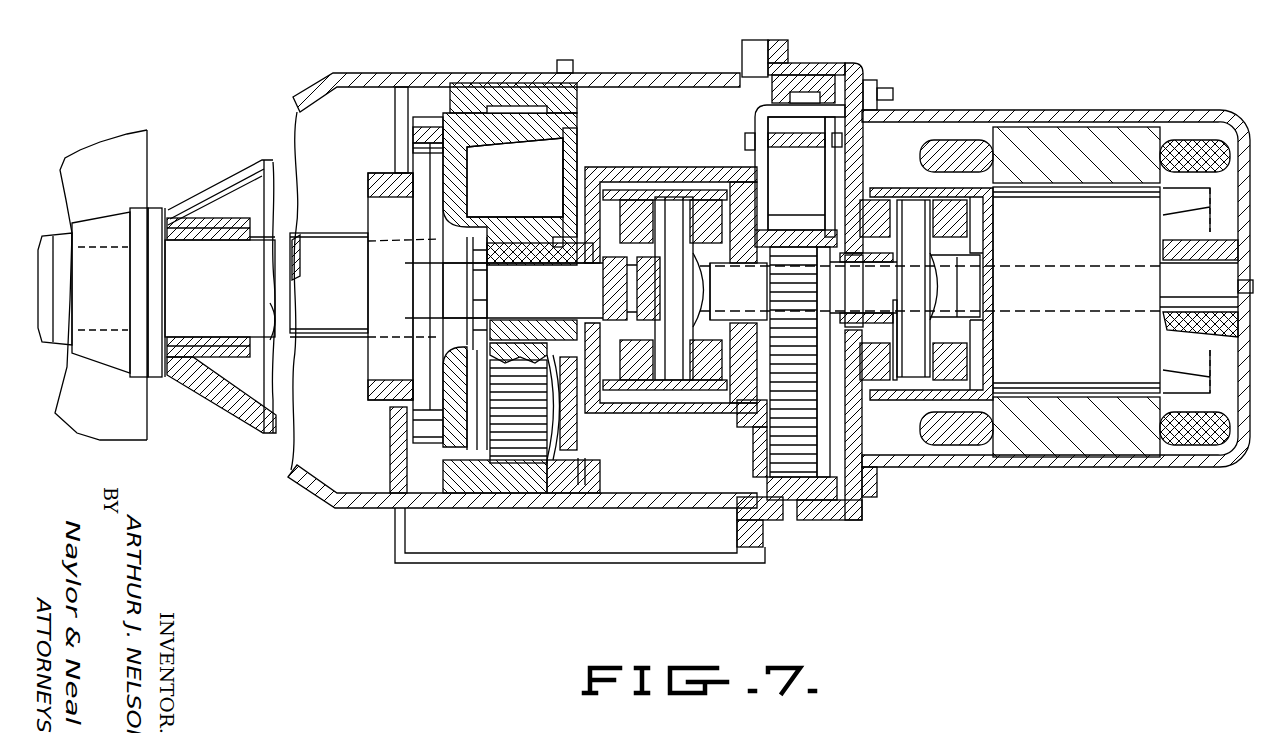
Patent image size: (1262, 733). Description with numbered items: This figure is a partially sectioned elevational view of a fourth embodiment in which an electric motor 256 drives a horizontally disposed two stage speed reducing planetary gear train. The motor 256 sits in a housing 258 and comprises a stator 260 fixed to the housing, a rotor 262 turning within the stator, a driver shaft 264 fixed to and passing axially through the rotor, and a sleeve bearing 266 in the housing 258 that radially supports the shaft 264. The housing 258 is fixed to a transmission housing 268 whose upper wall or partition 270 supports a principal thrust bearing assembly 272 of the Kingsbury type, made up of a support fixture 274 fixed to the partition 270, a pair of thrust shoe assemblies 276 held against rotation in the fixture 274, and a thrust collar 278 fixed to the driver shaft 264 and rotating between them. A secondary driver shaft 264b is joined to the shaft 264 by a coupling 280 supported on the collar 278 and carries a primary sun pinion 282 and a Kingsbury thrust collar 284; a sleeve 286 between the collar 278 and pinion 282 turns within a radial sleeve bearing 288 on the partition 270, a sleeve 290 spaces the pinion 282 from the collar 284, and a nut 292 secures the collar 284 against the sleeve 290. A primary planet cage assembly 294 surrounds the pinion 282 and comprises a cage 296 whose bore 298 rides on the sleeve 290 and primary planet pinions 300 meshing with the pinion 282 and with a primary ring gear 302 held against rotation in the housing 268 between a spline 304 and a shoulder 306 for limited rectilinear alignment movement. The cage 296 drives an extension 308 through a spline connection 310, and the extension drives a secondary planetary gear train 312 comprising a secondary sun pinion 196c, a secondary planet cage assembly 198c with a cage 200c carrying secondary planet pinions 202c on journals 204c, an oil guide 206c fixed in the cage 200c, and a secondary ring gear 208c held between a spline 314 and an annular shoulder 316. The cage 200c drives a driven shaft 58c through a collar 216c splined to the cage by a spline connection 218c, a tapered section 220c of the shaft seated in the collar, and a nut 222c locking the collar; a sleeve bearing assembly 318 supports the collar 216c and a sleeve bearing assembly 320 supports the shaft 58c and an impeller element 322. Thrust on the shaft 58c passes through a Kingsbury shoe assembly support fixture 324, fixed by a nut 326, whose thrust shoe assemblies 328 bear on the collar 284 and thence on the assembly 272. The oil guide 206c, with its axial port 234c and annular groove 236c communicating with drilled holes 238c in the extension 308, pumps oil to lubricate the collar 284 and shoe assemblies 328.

The driven shaft 58c is at (340, 345).
The secondary sun pinion 196c is at (510, 228).
The secondary planet cage assembly 198c is at (435, 108).
The cage 200c is at (578, 140).
The secondary planet pinions 202c is at (480, 478).
The journals 204c is at (556, 400).
The oil guide 206c is at (555, 200).
The secondary ring gear 208c is at (505, 487).
The collar 216c is at (425, 150).
The spline connection 218c is at (425, 132).
The tapered section 220c is at (375, 225).
The nut 222c is at (470, 327).
The axial port 234c is at (548, 320).
The annular groove 236c is at (580, 310).
The drilled holes 238c is at (563, 305).
The electric motor 256 is at (1080, 140).
The housing 258 is at (1040, 462).
The stator 260 is at (1197, 445).
The rotor 262 is at (1102, 369).
The driver shaft 264 is at (1185, 293).
The secondary driver shaft 264b is at (772, 250).
The sleeve bearing 266 is at (1180, 252).
The transmission housing 268 is at (622, 498).
The partition 270 is at (866, 68).
The principal thrust bearing assembly 272 is at (910, 175).
The support fixture 274 is at (985, 232).
The thrust shoe assemblies 276 is at (960, 360).
The thrust collar 278 is at (905, 372).
The coupling 280 is at (950, 290).
The primary sun pinion 282 is at (810, 290).
The Kingsbury thrust collar 284 is at (672, 380).
The sleeve 286 is at (862, 265).
The radial sleeve bearing 288 is at (872, 330).
The sleeve 290 is at (757, 303).
The nut 292 is at (645, 400).
The primary planet cage assembly 294 is at (748, 115).
The cage 296 is at (755, 150).
The bore 298 is at (773, 262).
The primary planet pinions 300 is at (797, 500).
The primary ring gear 302 is at (797, 70).
The spline 304 is at (770, 500).
The shoulder 306 is at (825, 510).
The extension 308 is at (633, 178).
The spline connection 310 is at (740, 418).
The secondary planetary gear train 312 is at (574, 460).
The spline 314 is at (470, 88).
The annular shoulder 316 is at (555, 488).
The sleeve bearing assembly 318 is at (368, 195).
The sleeve bearing assembly 320 is at (213, 372).
The impeller element 322 is at (150, 440).
The Kingsbury shoe assembly support fixture 324 is at (625, 395).
The nut 326 is at (617, 240).
The thrust shoe assemblies 328 is at (637, 210).